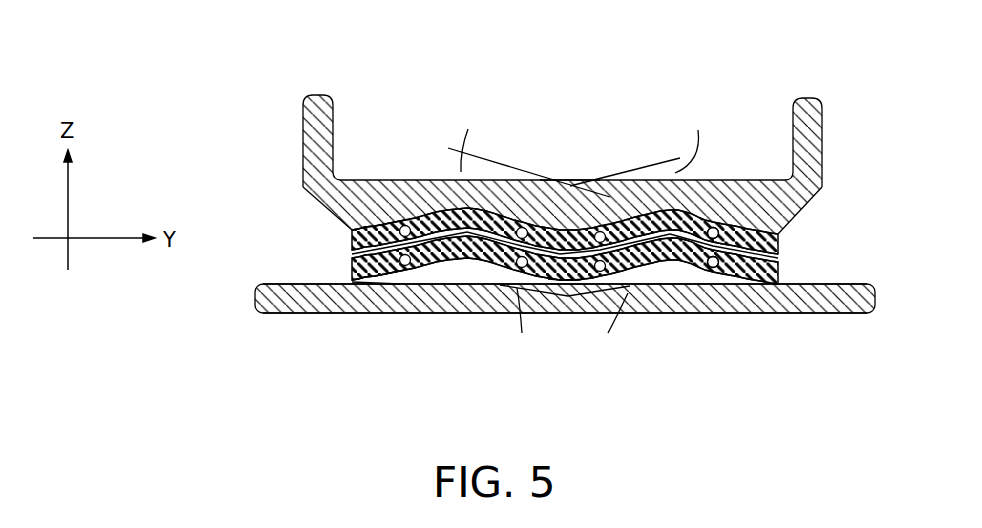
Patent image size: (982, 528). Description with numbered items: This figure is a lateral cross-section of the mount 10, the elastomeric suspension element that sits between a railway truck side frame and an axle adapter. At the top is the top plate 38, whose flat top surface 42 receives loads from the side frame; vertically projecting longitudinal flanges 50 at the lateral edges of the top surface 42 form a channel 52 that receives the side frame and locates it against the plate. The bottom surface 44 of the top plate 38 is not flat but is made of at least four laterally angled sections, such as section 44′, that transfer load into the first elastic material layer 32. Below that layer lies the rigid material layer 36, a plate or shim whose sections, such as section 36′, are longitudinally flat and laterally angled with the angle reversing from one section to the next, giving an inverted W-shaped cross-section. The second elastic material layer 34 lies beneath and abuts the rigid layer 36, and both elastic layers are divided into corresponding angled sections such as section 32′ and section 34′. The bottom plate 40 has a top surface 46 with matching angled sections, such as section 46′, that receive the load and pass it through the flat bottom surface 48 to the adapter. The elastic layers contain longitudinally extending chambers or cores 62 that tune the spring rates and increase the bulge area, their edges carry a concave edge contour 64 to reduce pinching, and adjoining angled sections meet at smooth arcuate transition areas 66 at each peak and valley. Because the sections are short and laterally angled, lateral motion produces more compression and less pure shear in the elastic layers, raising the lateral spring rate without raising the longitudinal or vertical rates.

The mount 10 is at (313, 46).
The first elastic material layer 32 is at (777, 243).
The section of first elastic material layer 32′ is at (433, 238).
The second elastic material layer 34 is at (780, 278).
The section of second elastic material layer 34′ is at (420, 265).
The rigid material layer 36 is at (781, 263).
The section of rigid material layer 36′ is at (437, 250).
The top plate 38 is at (322, 170).
The bottom plate 40 is at (322, 300).
The top surface 42 is at (362, 175).
The bottom surface 44 is at (344, 236).
The section of bottom surface 44′ is at (392, 230).
The top surface 46 is at (272, 276).
The section of top surface 46′ is at (352, 286).
The bottom surface 48 is at (272, 316).
The flanges 50 is at (320, 130).
The channel 52 is at (567, 114).
The chamber or core 62 is at (712, 255).
The edge contour 64 is at (347, 270).
The transition area 66 is at (567, 300).